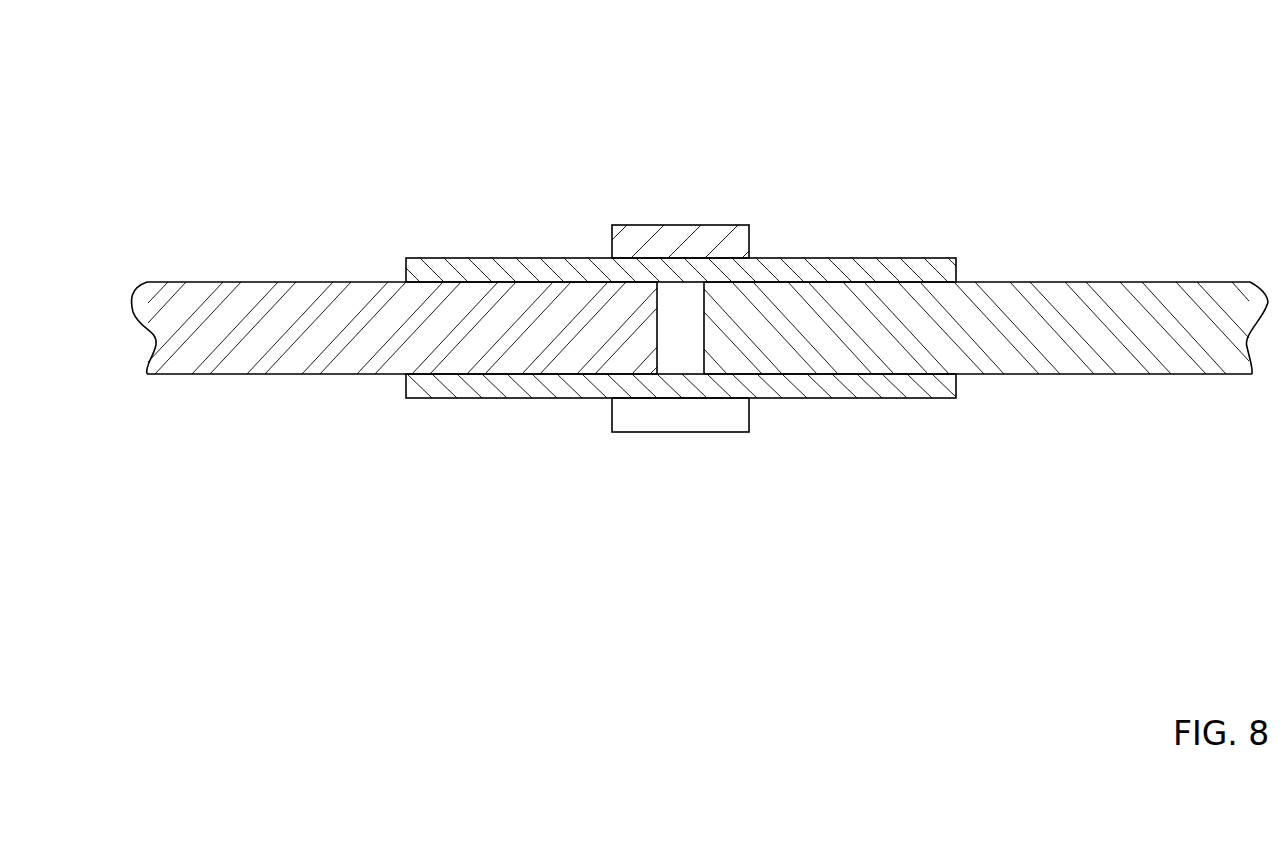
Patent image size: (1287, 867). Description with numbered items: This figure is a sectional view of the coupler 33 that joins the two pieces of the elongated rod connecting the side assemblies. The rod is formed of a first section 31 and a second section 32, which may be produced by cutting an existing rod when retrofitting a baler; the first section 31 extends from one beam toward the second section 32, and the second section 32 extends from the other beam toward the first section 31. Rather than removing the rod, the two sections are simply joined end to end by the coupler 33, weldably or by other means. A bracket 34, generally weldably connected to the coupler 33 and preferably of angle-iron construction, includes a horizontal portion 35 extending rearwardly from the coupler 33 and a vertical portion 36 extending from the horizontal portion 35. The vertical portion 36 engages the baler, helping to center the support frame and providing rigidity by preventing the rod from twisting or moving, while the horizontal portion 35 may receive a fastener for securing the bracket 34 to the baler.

The first section 31 is at (322, 313).
The second section 32 is at (1071, 307).
The coupler 33 is at (847, 268).
The bracket 34 is at (707, 222).
The horizontal portion 35 is at (643, 240).
The vertical portion 36 is at (704, 413).